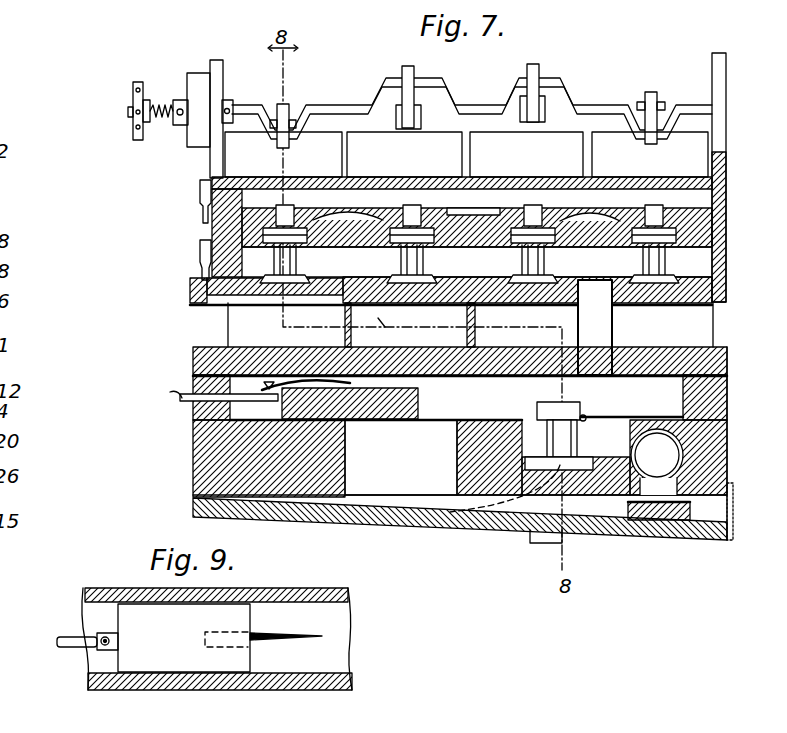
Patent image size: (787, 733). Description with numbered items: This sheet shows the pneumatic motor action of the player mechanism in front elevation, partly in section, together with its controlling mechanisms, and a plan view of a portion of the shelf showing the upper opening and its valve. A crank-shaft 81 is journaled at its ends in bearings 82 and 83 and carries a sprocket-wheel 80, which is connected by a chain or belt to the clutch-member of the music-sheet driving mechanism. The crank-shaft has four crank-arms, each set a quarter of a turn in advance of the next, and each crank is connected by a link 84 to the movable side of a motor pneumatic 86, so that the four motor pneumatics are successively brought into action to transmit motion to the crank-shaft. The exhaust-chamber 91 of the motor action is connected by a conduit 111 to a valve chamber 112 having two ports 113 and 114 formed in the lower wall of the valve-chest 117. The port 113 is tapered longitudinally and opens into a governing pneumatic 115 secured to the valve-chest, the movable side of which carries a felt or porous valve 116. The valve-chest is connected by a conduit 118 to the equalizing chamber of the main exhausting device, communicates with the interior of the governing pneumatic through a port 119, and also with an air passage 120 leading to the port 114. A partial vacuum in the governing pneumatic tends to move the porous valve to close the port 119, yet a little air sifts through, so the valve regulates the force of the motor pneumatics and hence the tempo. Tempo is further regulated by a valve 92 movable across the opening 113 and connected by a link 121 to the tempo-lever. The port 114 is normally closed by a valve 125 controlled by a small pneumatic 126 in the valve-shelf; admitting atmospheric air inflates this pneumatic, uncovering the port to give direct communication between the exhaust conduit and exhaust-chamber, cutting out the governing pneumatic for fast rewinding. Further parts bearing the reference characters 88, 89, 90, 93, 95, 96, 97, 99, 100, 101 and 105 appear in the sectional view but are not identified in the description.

In FIG. 7, the sprocket-wheel 80 is at (138, 140).
In FIG. 7, the crank-shaft 81 is at (368, 102).
In FIG. 7, the bearing 82 is at (222, 98).
In FIG. 7, the bearing 83 is at (720, 72).
In FIG. 7, the link 84 is at (290, 110).
In FIG. 7, the motor pneumatic 86 is at (466, 154).
In FIG. 7, the valve seat body 88 is at (316, 214).
In FIG. 7, the valve disk 89 is at (300, 250).
In FIG. 7, the valve stem 90 is at (532, 215).
In FIG. 7, the exhaust-chamber 91 is at (477, 262).
In FIG. 7, the valve 92 is at (373, 410).
In FIG. 9, the valve 92 is at (184, 638).
In FIG. 7, the passage 93 is at (473, 201).
In FIG. 7, the bushing 95 is at (518, 215).
In FIG. 7, the valve guide 96 is at (277, 272).
In FIG. 7, the passage 97 is at (383, 334).
In FIG. 7, the side plate 99 is at (207, 155).
In FIG. 7, the bottom member 100 is at (210, 304).
In FIG. 7, the plunger 101 is at (198, 258).
In FIG. 7, the bracket 105 is at (187, 85).
In FIG. 7, the conduit 111 is at (598, 327).
In FIG. 7, the valve chamber 112 is at (460, 443).
In FIG. 9, the valve chamber 112 is at (322, 606).
In FIG. 7, the port 113 is at (437, 435).
In FIG. 9, the port 113 is at (268, 640).
In FIG. 7, the port 114 is at (578, 420).
In FIG. 7, the governing pneumatic 115 is at (440, 504).
In FIG. 7, the porous valve 116 is at (658, 521).
In FIG. 7, the valve-chest 117 is at (207, 437).
In FIG. 7, the conduit 118 is at (657, 462).
In FIG. 7, the port 119 is at (664, 487).
In FIG. 7, the air passage 120 is at (625, 430).
In FIG. 7, the link 121 is at (183, 399).
In FIG. 9, the link 121 is at (72, 638).
In FIG. 7, the valve 125 is at (550, 406).
In FIG. 7, the small pneumatic 126 is at (530, 510).